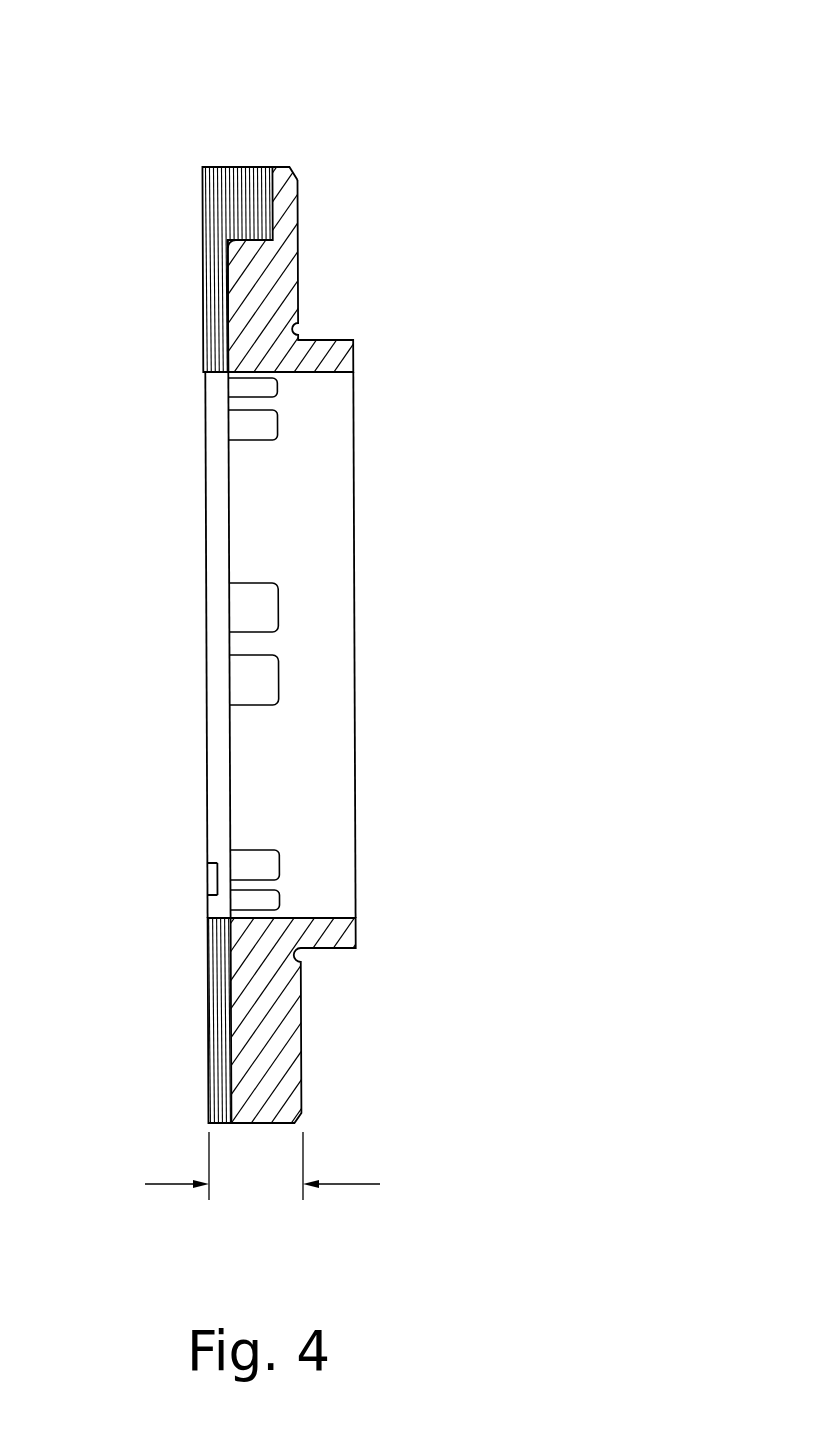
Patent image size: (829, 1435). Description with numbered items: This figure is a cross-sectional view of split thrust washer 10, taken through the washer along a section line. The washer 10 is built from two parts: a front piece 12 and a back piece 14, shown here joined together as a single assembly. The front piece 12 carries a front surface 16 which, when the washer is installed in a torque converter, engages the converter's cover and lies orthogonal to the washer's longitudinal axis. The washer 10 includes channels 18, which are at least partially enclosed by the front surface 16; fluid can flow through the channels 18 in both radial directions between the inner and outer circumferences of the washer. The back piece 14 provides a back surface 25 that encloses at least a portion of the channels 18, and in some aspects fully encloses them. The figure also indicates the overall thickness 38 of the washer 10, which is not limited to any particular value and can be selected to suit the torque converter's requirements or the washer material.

The split thrust washer 10 is at (338, 131).
The front piece 12 is at (283, 165).
The back piece 14 is at (218, 165).
The front surface 16 is at (302, 262).
The channel 18 is at (243, 605).
The back surface 25 is at (203, 272).
The thickness 38 is at (288, 1166).